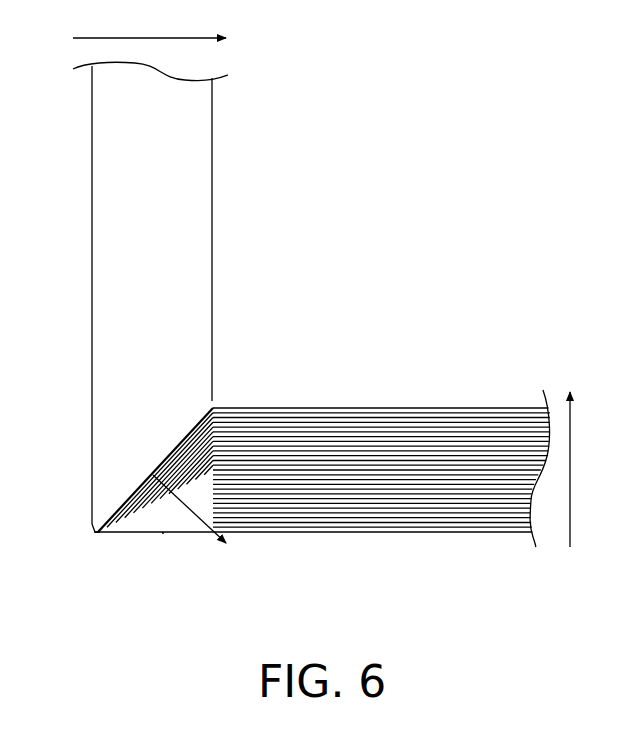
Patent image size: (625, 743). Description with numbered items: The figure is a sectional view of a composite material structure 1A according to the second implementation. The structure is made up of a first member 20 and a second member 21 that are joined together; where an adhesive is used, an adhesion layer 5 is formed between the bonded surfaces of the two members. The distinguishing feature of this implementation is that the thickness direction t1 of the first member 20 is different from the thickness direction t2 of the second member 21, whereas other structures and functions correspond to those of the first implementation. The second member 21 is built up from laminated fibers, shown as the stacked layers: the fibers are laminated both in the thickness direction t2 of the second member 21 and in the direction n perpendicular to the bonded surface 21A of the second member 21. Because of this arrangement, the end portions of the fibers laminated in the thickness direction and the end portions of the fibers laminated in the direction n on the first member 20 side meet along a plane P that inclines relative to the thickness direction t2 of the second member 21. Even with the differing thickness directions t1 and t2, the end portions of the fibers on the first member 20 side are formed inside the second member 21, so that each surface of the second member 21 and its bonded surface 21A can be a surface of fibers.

The composite material structure 1A is at (556, 90).
The first member 20 is at (213, 245).
The second member 21 is at (388, 408).
The bonded surface 21A is at (92, 525).
The adhesion layer 5 is at (121, 498).
The thickness direction of the first member t1 is at (170, 39).
The thickness direction of the second member t2 is at (572, 454).
The direction perpendicular to the bonded surface n is at (200, 522).
The plane P is at (163, 535).